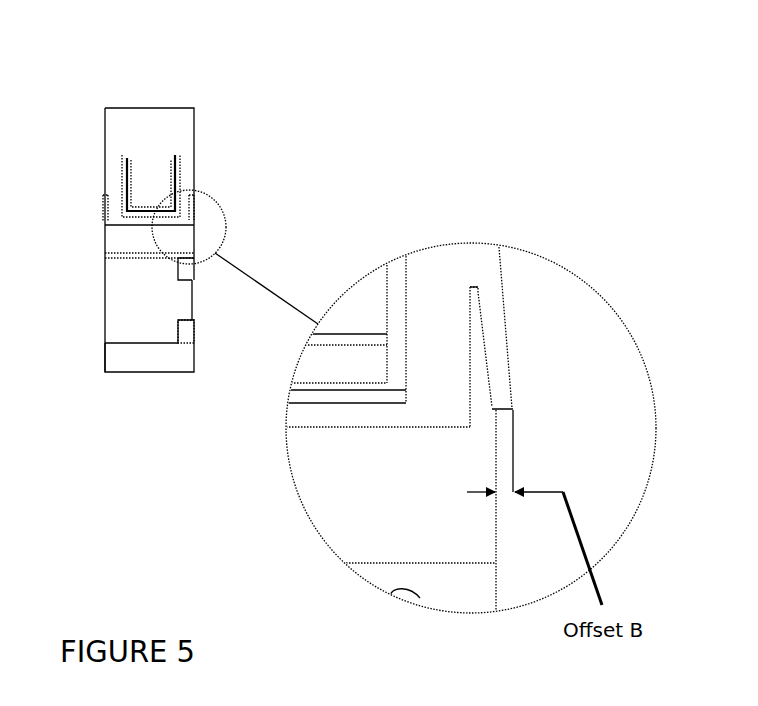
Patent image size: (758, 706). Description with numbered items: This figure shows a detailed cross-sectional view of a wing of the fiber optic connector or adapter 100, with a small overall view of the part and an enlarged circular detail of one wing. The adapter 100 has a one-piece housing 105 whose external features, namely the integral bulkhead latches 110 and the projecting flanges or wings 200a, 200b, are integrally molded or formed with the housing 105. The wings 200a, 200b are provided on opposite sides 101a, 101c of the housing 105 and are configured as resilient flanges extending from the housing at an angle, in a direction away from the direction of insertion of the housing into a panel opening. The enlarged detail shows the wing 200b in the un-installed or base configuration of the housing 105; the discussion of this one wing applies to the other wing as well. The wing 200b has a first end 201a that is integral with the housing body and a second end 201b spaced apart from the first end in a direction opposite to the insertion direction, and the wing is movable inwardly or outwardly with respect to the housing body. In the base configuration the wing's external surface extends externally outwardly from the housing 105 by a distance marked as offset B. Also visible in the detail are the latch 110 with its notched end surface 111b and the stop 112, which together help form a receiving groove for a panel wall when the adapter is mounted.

The fiber optic connector or adapter 100 is at (182, 88).
The one-piece housing 105 is at (183, 133).
The integral bulkhead latch 110 is at (142, 172).
The notched end surface 111b is at (368, 363).
The stop 112 is at (118, 238).
The wing 200a is at (100, 212).
The wing 200b is at (188, 212).
The first end of wing 201a is at (485, 290).
The second end of wing 201b is at (500, 387).
The side of housing 101a is at (103, 332).
The side of housing 101c is at (195, 334).